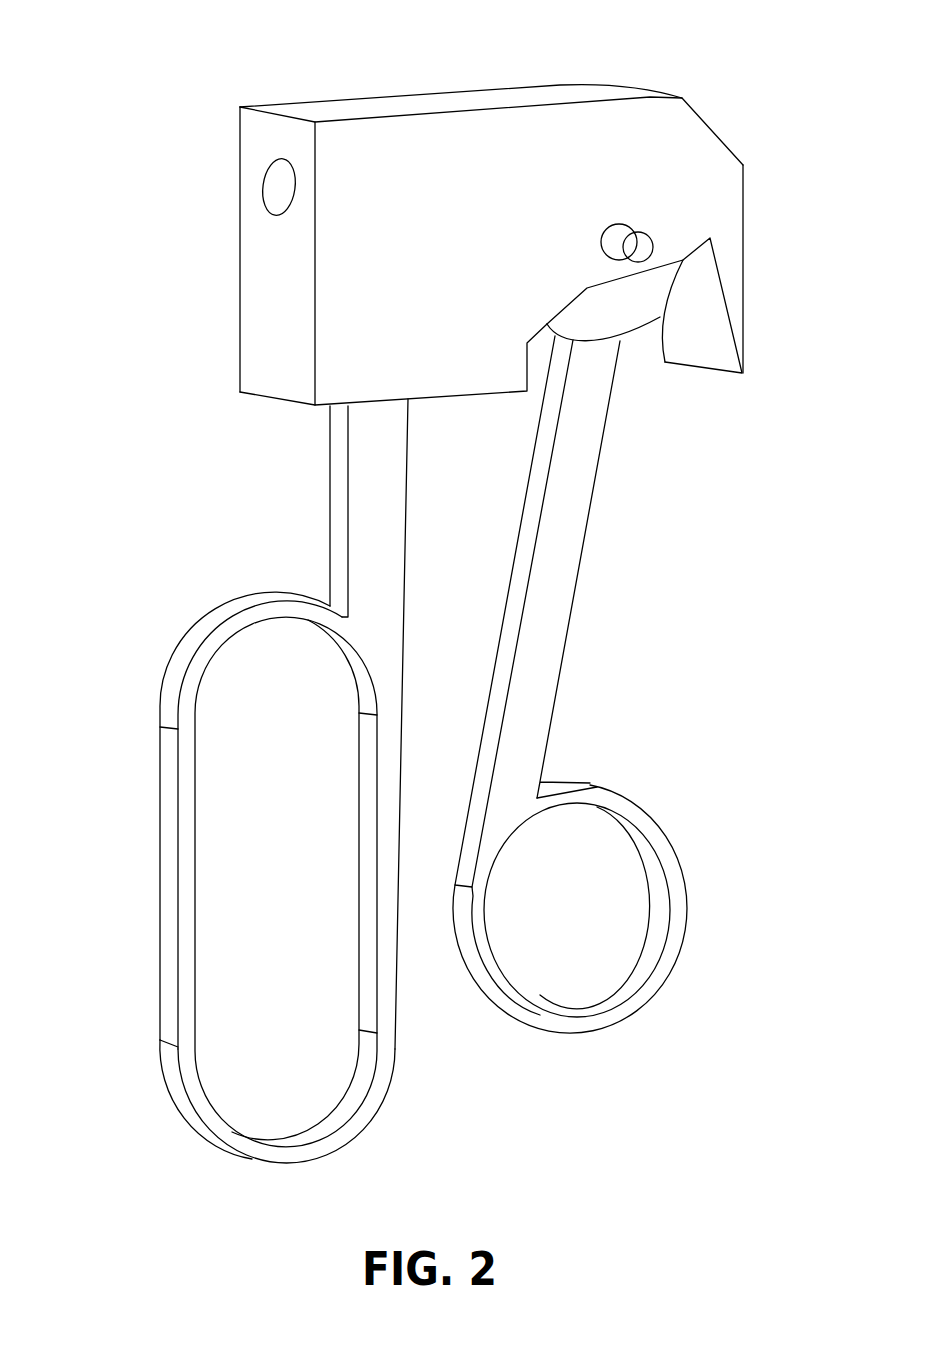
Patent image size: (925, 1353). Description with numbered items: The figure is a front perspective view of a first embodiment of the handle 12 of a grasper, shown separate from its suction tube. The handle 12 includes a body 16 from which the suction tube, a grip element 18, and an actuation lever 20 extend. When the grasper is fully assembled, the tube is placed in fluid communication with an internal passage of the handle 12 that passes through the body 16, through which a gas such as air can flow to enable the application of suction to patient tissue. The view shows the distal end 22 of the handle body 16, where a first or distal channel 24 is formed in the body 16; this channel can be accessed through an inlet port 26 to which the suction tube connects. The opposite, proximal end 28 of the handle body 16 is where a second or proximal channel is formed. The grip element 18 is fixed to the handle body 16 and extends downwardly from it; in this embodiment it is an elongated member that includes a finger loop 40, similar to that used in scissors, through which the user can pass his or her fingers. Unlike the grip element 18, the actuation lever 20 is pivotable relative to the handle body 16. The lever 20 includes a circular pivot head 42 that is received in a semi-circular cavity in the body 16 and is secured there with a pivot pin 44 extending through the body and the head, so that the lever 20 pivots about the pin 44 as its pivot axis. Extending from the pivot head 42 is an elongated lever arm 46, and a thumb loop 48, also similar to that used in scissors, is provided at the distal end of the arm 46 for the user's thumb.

The handle 12 is at (84, 63).
The body 16 is at (430, 103).
The grip element 18 is at (92, 895).
The actuation lever 20 is at (665, 605).
The distal end 22 is at (217, 355).
The distal channel 24 is at (277, 203).
The inlet port 26 is at (252, 178).
The proximal end 28 is at (772, 212).
The finger loop 40 is at (170, 1078).
The pivot head 42 is at (632, 320).
The pivot pin 44 is at (638, 240).
The lever arm 46 is at (558, 660).
The thumb loop 48 is at (668, 948).